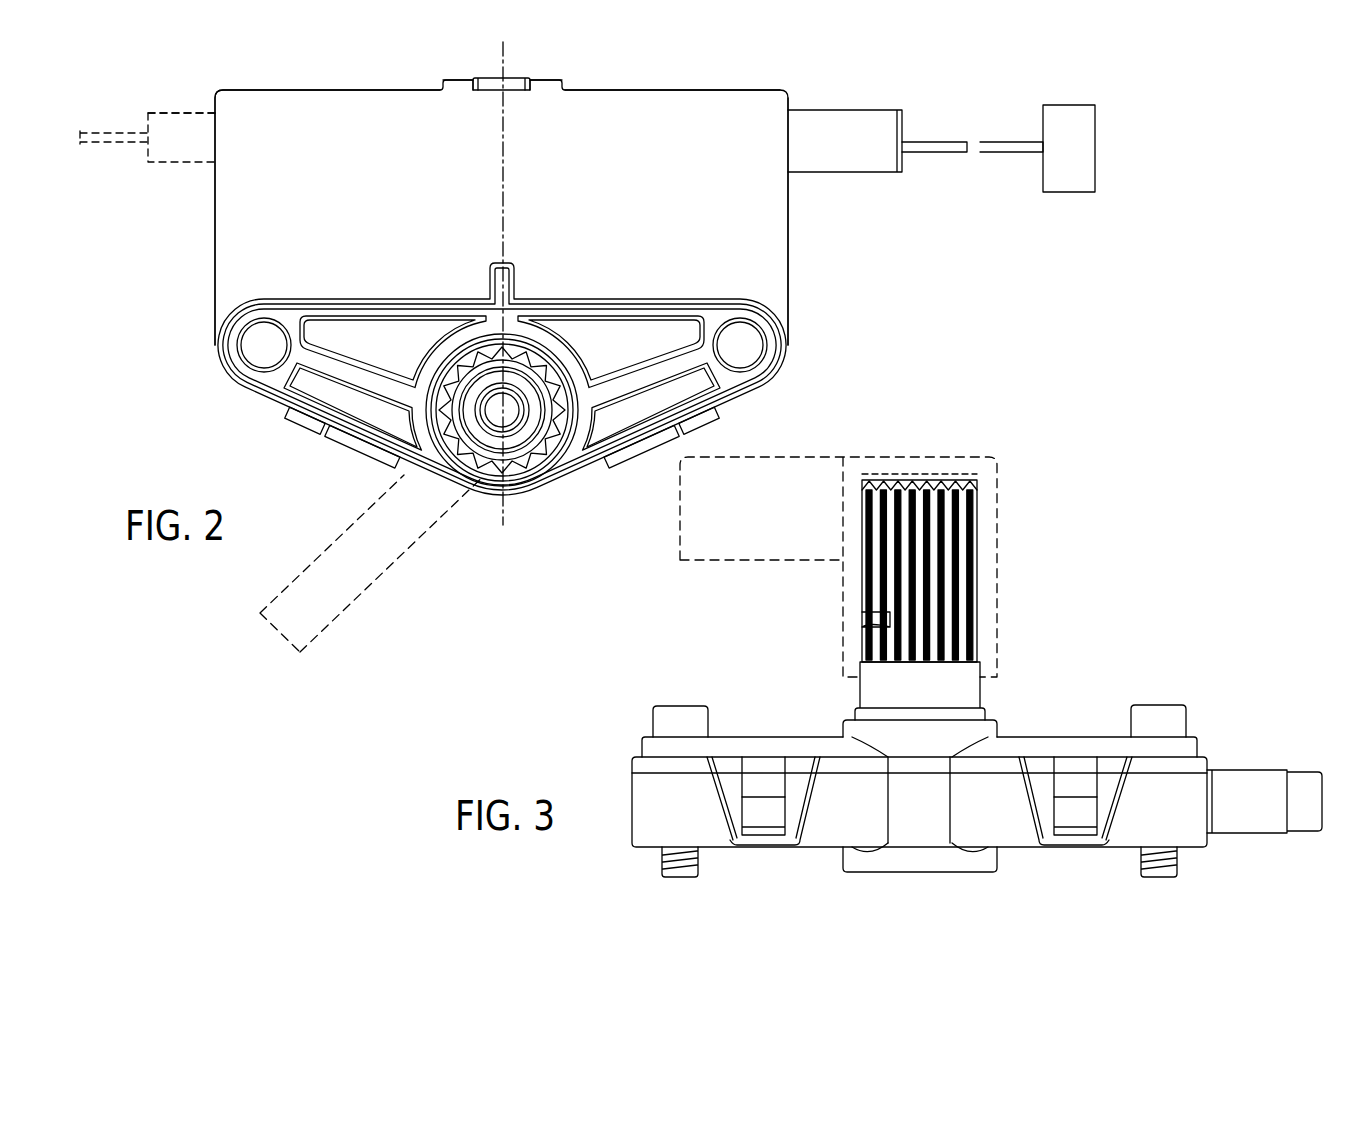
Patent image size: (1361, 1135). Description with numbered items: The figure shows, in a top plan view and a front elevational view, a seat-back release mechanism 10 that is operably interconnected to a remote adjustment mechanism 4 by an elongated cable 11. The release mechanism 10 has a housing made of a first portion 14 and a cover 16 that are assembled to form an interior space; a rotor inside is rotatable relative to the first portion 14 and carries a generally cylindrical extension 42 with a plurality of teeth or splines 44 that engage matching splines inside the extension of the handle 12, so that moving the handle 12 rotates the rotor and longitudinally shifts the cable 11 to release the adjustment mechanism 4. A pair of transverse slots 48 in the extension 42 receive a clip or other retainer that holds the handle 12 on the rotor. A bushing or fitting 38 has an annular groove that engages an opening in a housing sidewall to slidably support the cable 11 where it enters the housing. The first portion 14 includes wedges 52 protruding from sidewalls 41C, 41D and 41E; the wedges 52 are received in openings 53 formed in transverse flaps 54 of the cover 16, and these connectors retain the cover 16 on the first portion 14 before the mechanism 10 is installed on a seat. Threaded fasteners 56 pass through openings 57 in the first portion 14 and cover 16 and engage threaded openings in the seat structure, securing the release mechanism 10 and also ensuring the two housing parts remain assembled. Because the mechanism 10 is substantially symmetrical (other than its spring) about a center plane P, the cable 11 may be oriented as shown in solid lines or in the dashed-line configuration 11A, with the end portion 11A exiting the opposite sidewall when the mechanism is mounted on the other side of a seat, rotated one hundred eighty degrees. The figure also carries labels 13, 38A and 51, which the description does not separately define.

In FIG. 2, the adjustment mechanism 4 is at (1055, 178).
In FIG. 2, the release mechanism 10 is at (792, 296).
In FIG. 2, the elongated cable 11 is at (945, 152).
In FIG. 2, the end portion of cable 11A is at (117, 130).
In FIG. 2, the handle 12 is at (365, 580).
In FIG. 3, the handle 12 is at (720, 558).
In FIG. 2, the housing 13 is at (752, 85).
In FIG. 3, the housing 13 is at (632, 822).
In FIG. 3, the first portion of housing 14 is at (636, 858).
In FIG. 2, the cover 16 is at (760, 218).
In FIG. 3, the cover 16 is at (640, 757).
In FIG. 2, the bushing or fitting 38 is at (842, 118).
In FIG. 3, the bushing or fitting 38 is at (1240, 770).
In FIG. 2, the connector 38A is at (190, 110).
In FIG. 2, the sidewall 41C is at (630, 102).
In FIG. 2, the sidewall 41D is at (272, 410).
In FIG. 2, the sidewall 41E is at (735, 410).
In FIG. 3, the cylindrical extension 42 is at (977, 545).
In FIG. 3, the splines 44 is at (977, 577).
In FIG. 3, the transverse slots 48 is at (862, 618).
In FIG. 2, the left mounting hole 51 is at (250, 345).
In FIG. 2, the wedges 52 is at (508, 82).
In FIG. 3, the wedges 52 is at (765, 815).
In FIG. 3, the openings 53 is at (768, 762).
In FIG. 2, the transverse flaps 54 is at (535, 82).
In FIG. 3, the transverse flaps 54 is at (724, 750).
In FIG. 3, the threaded fasteners 56 is at (670, 703).
In FIG. 2, the openings 57 is at (752, 352).
In FIG. 2, the center plane P is at (503, 507).